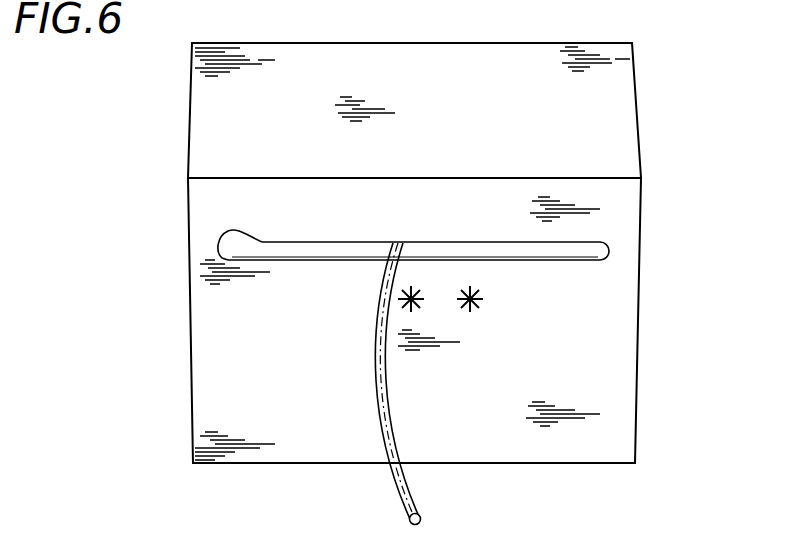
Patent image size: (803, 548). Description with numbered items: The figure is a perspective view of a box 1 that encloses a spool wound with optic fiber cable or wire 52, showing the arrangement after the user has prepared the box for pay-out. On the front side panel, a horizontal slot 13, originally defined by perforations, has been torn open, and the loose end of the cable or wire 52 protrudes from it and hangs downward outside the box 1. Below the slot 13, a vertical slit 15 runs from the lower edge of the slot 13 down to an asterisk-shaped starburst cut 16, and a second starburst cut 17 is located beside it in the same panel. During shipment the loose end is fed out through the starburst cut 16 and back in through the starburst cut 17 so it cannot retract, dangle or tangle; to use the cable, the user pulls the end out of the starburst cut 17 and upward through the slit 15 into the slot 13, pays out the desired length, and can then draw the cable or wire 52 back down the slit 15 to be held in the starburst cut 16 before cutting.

The box 1 is at (680, 116).
The slot 13 is at (608, 251).
The slit 15 is at (412, 261).
The starburst cut 16 is at (421, 304).
The second starburst cut 17 is at (479, 304).
The cable or wire 52 is at (396, 491).